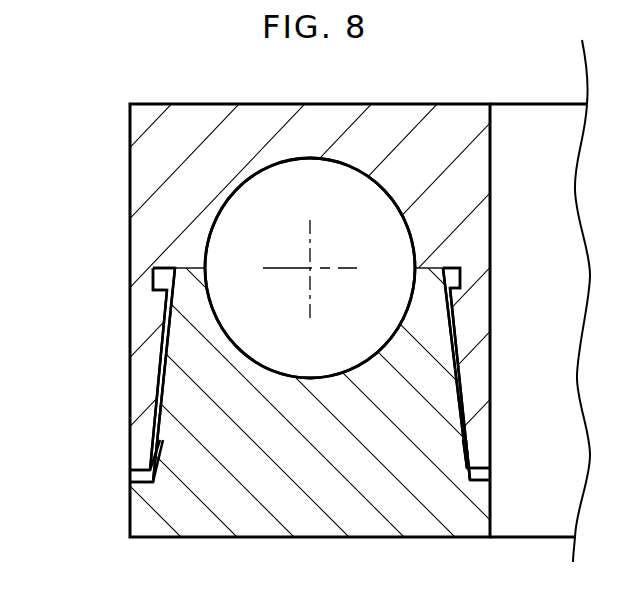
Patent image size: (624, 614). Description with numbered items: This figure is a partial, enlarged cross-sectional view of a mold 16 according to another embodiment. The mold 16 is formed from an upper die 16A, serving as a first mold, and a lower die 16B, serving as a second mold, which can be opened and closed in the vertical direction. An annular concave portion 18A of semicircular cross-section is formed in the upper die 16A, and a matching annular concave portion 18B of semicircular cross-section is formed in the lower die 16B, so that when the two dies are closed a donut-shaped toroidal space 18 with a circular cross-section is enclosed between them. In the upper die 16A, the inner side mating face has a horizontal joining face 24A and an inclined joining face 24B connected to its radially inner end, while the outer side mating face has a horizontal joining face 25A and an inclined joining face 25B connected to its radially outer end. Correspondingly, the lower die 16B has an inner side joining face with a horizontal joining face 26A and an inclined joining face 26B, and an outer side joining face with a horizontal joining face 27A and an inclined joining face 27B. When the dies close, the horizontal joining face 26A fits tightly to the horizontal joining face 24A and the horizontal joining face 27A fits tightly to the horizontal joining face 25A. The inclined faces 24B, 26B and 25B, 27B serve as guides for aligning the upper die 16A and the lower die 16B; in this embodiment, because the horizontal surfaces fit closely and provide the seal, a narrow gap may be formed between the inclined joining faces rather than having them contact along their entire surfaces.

The mold 16 is at (410, 102).
The upper die 16A is at (129, 182).
The lower die 16B is at (129, 518).
The toroidal space 18 is at (376, 228).
The annular concave portion 18A is at (235, 192).
The annular concave portion 18B is at (262, 366).
The horizontal joining face 24A is at (465, 312).
The inclined joining face 24B is at (467, 452).
The horizontal joining face 25A is at (164, 313).
The inclined joining face 25B is at (158, 437).
The horizontal joining face 26A is at (465, 312).
The inclined joining face 26B is at (462, 423).
The horizontal joining face 27A is at (170, 307).
The inclined joining face 27B is at (152, 393).